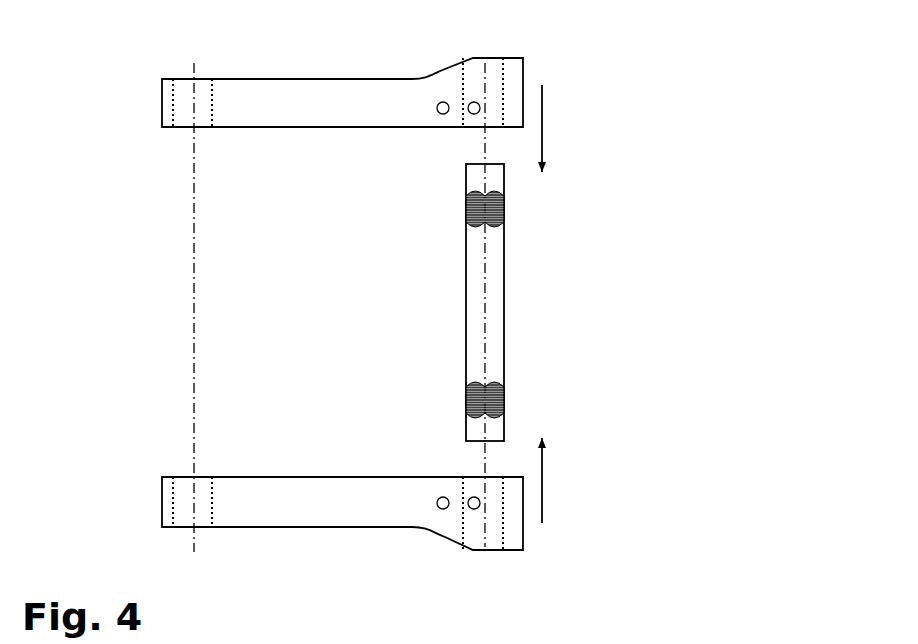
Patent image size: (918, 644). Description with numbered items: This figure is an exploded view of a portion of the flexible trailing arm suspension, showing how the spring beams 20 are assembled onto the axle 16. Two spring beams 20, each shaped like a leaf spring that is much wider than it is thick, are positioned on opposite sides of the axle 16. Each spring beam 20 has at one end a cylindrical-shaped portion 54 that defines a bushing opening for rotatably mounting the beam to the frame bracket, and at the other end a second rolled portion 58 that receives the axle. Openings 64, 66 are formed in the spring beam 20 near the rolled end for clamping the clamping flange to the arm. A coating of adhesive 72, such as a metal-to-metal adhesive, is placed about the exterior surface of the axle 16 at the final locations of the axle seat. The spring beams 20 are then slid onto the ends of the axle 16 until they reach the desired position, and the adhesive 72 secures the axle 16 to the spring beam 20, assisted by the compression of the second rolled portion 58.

The axle 16 is at (506, 295).
The spring beam 20 is at (288, 78).
The cylindrical-shaped portion 54 is at (207, 78).
The second rolled portion 58 is at (512, 56).
The opening 64 is at (441, 101).
The opening 66 is at (474, 101).
The adhesive 72 is at (504, 211).